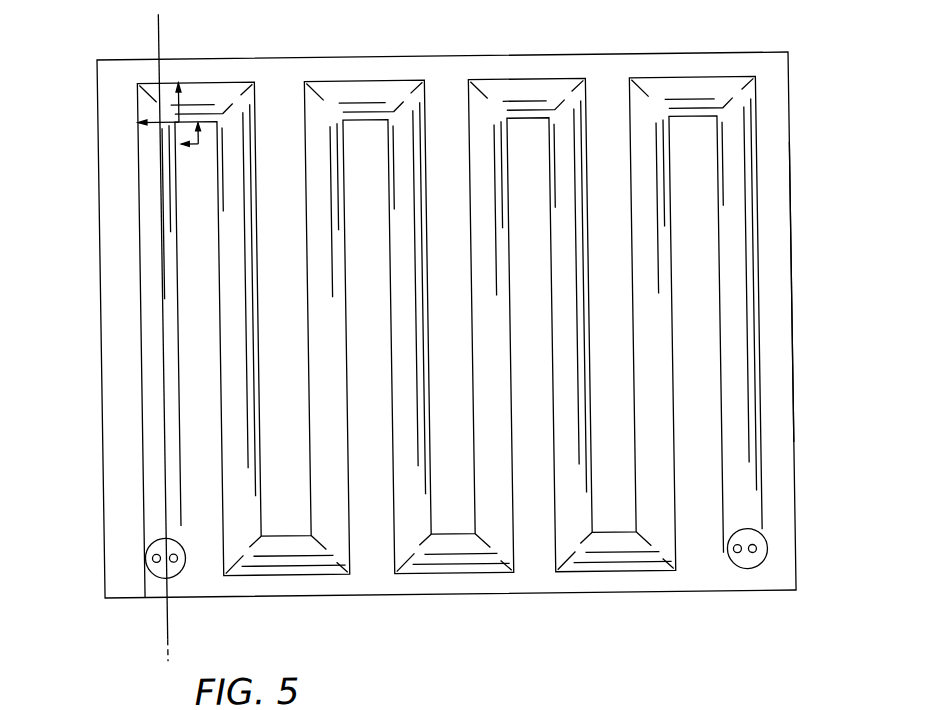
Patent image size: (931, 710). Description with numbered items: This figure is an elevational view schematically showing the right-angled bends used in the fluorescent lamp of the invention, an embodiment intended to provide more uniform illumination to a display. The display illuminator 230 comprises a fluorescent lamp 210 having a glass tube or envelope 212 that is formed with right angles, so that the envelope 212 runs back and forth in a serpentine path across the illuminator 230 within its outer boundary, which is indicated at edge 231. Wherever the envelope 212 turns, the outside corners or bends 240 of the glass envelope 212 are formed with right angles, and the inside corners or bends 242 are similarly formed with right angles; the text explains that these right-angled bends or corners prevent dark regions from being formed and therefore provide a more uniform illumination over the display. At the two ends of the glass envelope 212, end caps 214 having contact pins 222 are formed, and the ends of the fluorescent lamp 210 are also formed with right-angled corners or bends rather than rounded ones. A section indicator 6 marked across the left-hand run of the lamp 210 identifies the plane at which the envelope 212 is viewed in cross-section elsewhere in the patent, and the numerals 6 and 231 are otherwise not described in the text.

The section line 6- 6 is at (185, 33).
The fluorescent lamp 210 is at (122, 461).
The glass envelope 212 is at (228, 331).
The end cap 214 is at (151, 540).
The contact pin 222 is at (163, 562).
The display illuminator 230 is at (568, 48).
The plate edge 231 is at (789, 327).
The outside corners or bends 240 is at (317, 97).
The inside corners or bends 242 is at (182, 145).